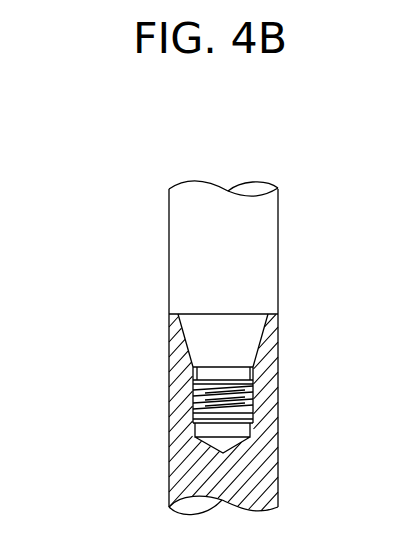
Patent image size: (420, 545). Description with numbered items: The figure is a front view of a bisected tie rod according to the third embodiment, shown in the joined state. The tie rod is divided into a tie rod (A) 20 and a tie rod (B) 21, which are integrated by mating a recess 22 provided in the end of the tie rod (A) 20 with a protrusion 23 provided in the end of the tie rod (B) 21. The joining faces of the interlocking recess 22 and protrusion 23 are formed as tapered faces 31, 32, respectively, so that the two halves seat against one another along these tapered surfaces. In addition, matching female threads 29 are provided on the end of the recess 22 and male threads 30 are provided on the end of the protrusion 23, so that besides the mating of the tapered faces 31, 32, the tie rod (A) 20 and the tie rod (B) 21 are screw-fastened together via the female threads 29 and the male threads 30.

The tie rod (A) 20 is at (273, 482).
The tie rod (B) 21 is at (260, 241).
The recess 22 is at (200, 423).
The protrusion 23 is at (218, 322).
The female threads 29 is at (200, 388).
The male threads 30 is at (248, 399).
The tapered face 31 is at (188, 326).
The tapered face 32 is at (188, 326).